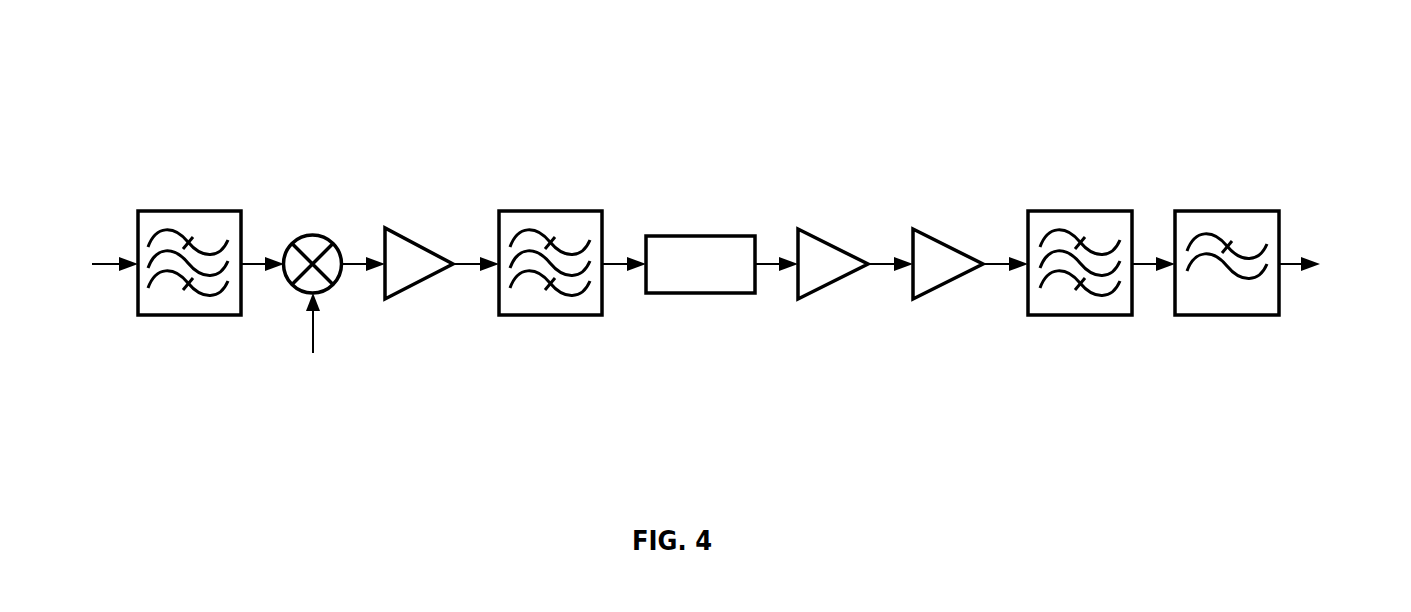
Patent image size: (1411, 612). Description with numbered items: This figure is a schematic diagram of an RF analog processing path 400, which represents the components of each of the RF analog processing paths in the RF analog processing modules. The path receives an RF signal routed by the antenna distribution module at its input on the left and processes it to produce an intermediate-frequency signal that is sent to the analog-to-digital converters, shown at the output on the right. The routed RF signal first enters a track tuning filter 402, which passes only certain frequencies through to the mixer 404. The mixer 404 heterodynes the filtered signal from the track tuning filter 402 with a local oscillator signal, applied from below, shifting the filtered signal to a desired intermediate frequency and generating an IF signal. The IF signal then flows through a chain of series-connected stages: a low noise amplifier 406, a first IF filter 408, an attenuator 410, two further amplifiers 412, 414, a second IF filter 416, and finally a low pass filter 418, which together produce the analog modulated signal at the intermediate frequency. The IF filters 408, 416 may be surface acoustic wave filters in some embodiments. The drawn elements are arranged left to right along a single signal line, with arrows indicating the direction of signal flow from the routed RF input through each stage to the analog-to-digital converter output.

The RF analog processing path 400 is at (130, 84).
The track tuning filter 402 is at (188, 210).
The mixer 404 is at (315, 234).
The low noise amplifier 406 is at (388, 300).
The IF filter 408 is at (553, 210).
The attenuator 410 is at (705, 235).
The amplifier 412 is at (817, 237).
The amplifier 414 is at (930, 237).
The IF filter 416 is at (1080, 210).
The low pass filter 418 is at (1229, 210).